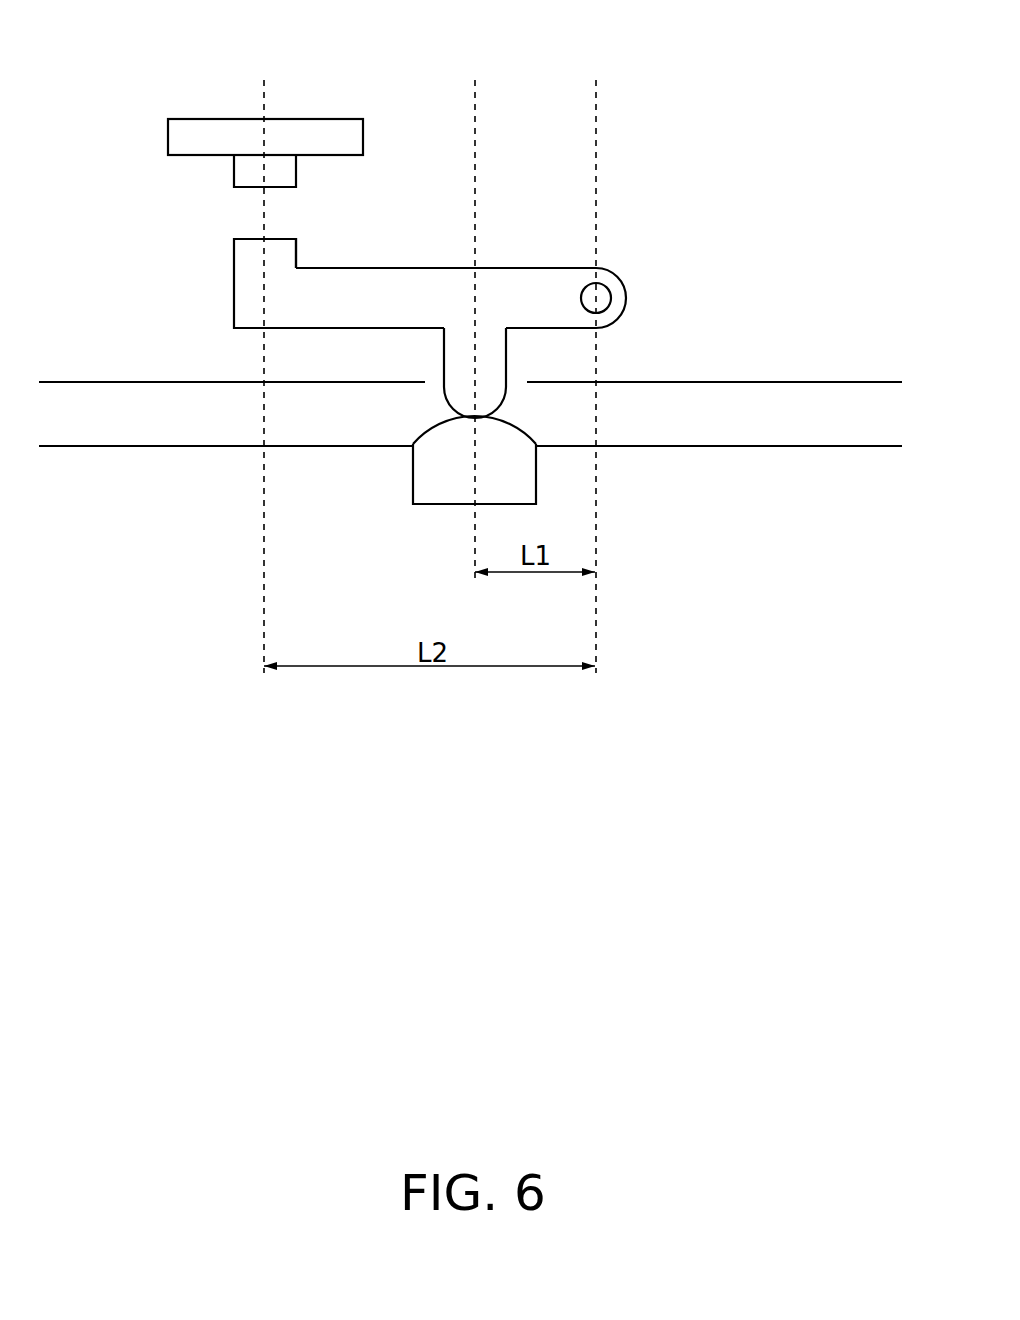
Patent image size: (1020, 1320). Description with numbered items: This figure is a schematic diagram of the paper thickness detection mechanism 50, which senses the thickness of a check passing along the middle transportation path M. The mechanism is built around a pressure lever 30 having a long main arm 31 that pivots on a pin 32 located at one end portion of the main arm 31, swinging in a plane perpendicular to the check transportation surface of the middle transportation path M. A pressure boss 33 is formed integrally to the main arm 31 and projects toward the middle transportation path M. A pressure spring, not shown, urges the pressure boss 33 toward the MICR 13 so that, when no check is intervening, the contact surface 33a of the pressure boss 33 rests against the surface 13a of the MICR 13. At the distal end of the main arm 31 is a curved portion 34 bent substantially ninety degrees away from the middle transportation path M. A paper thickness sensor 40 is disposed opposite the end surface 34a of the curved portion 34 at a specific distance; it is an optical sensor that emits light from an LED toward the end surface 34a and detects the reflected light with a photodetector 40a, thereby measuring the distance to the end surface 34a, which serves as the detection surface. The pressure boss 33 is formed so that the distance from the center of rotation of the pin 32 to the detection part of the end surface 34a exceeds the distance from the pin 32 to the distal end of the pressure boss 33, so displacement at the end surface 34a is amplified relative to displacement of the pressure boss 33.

The MICR 13 is at (537, 482).
The surface of the MICR 13a is at (503, 420).
The pressure lever 30 is at (424, 353).
The main arm 31 is at (450, 267).
The pin 32 is at (610, 305).
The pressure boss 33 is at (445, 357).
The contact surface 33a is at (477, 420).
The curved portion 34 is at (233, 278).
The end surface 34a is at (245, 238).
The paper thickness sensor 40 is at (350, 119).
The photodetector 40a is at (240, 190).
The paper thickness detection mechanism 50 is at (658, 147).
The middle transportation path M is at (808, 380).